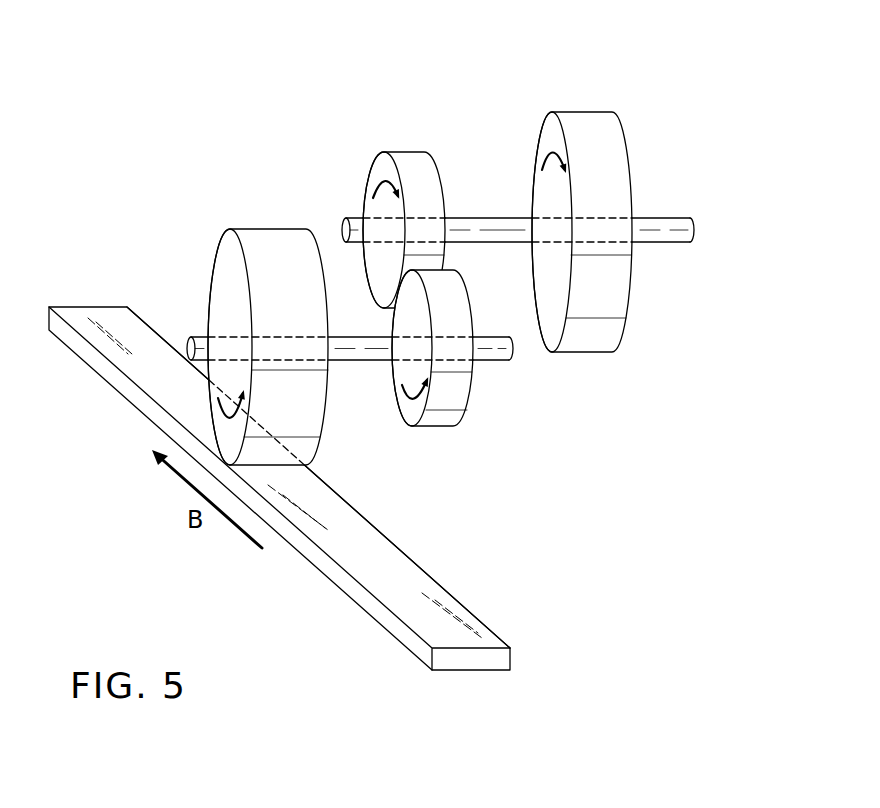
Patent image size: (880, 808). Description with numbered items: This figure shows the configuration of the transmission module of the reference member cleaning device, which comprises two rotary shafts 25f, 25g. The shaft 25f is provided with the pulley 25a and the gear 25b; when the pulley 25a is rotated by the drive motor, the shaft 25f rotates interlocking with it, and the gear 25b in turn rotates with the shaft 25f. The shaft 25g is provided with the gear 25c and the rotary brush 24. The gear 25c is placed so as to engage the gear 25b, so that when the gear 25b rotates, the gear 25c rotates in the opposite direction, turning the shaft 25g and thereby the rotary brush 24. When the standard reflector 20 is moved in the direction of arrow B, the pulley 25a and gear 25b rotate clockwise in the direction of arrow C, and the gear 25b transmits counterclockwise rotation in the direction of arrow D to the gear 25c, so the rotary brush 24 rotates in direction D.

The standard reflector 20 is at (448, 592).
The rotary brush 24 is at (265, 228).
The pulley 25a is at (585, 112).
The gear 25b is at (407, 152).
The gear 25c is at (433, 428).
The shaft 25f is at (490, 218).
The shaft 25g is at (362, 362).